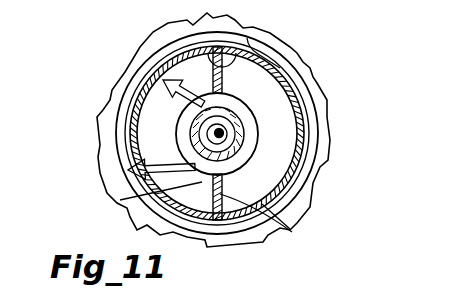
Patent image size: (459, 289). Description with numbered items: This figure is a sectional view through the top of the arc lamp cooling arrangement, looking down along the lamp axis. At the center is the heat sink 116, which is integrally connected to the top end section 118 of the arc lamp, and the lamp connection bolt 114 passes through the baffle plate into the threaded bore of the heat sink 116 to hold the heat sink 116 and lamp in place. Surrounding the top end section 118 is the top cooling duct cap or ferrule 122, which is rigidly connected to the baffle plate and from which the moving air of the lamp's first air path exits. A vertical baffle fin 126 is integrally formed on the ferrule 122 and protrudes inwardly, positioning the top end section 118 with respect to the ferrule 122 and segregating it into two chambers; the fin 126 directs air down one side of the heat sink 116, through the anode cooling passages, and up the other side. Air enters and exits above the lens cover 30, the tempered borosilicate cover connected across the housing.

The lens cover 30 is at (125, 72).
The lamp connection bolt 114 is at (157, 180).
The heat sink 116 is at (178, 133).
The top end section 118 is at (100, 160).
The top cooling duct cap or ferrule 122 is at (280, 64).
The vertical baffle fin 126 is at (247, 38).